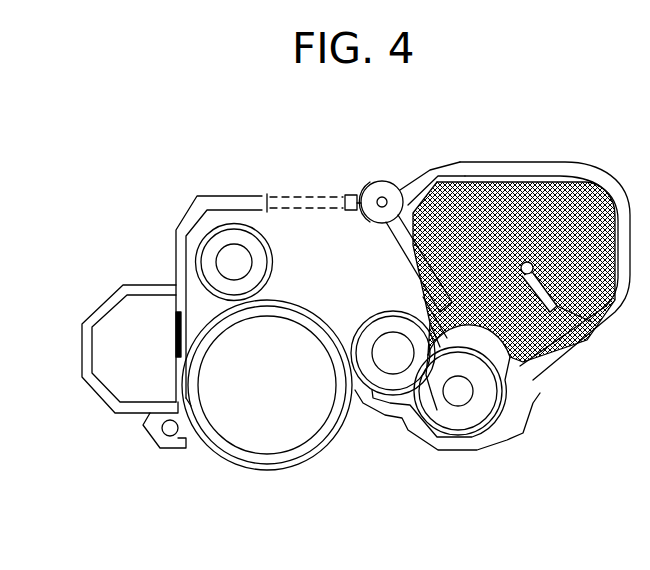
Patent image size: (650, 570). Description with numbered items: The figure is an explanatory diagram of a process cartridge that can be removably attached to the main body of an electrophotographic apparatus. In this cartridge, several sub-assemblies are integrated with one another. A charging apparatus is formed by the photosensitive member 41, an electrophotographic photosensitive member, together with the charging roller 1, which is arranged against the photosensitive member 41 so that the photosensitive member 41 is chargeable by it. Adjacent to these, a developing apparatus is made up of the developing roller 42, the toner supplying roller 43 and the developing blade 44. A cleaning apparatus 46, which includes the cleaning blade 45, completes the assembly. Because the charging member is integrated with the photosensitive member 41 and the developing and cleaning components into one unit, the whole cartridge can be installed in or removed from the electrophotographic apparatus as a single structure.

The charging roller 1 is at (208, 258).
The photosensitive member 41 is at (267, 462).
The developing roller 42 is at (388, 363).
The toner supplying roller 43 is at (477, 407).
The developing blade 44 is at (532, 378).
The cleaning blade 45 is at (177, 337).
The cleaning apparatus 46 is at (113, 407).